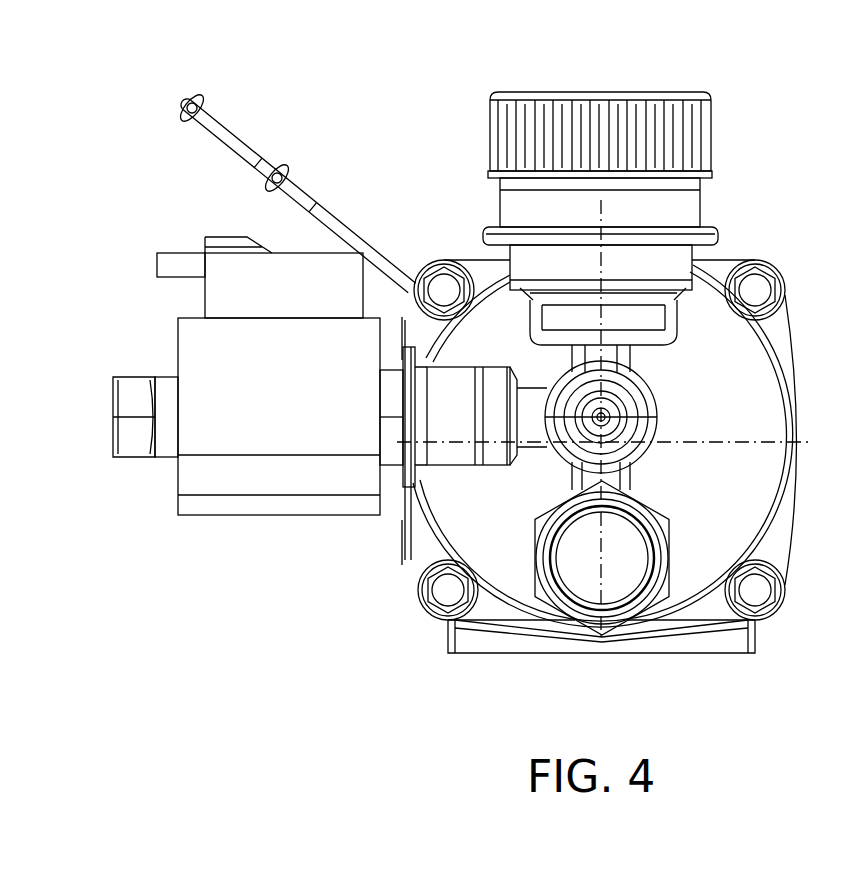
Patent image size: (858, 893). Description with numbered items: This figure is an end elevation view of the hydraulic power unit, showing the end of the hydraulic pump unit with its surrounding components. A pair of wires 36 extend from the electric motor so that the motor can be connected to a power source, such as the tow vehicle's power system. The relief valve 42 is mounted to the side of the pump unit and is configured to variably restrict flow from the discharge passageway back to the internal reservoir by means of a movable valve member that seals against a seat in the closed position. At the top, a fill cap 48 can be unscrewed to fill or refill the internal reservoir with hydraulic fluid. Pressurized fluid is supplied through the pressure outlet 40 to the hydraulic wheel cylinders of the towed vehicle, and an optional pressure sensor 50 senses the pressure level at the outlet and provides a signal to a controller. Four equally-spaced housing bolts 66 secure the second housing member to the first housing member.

The wires 36 is at (304, 188).
The pressure outlet 40 is at (606, 415).
The relief valve 42 is at (237, 518).
The fill cap 48 is at (490, 132).
The pressure sensor 50 is at (622, 558).
The housing bolts 66 is at (757, 290).